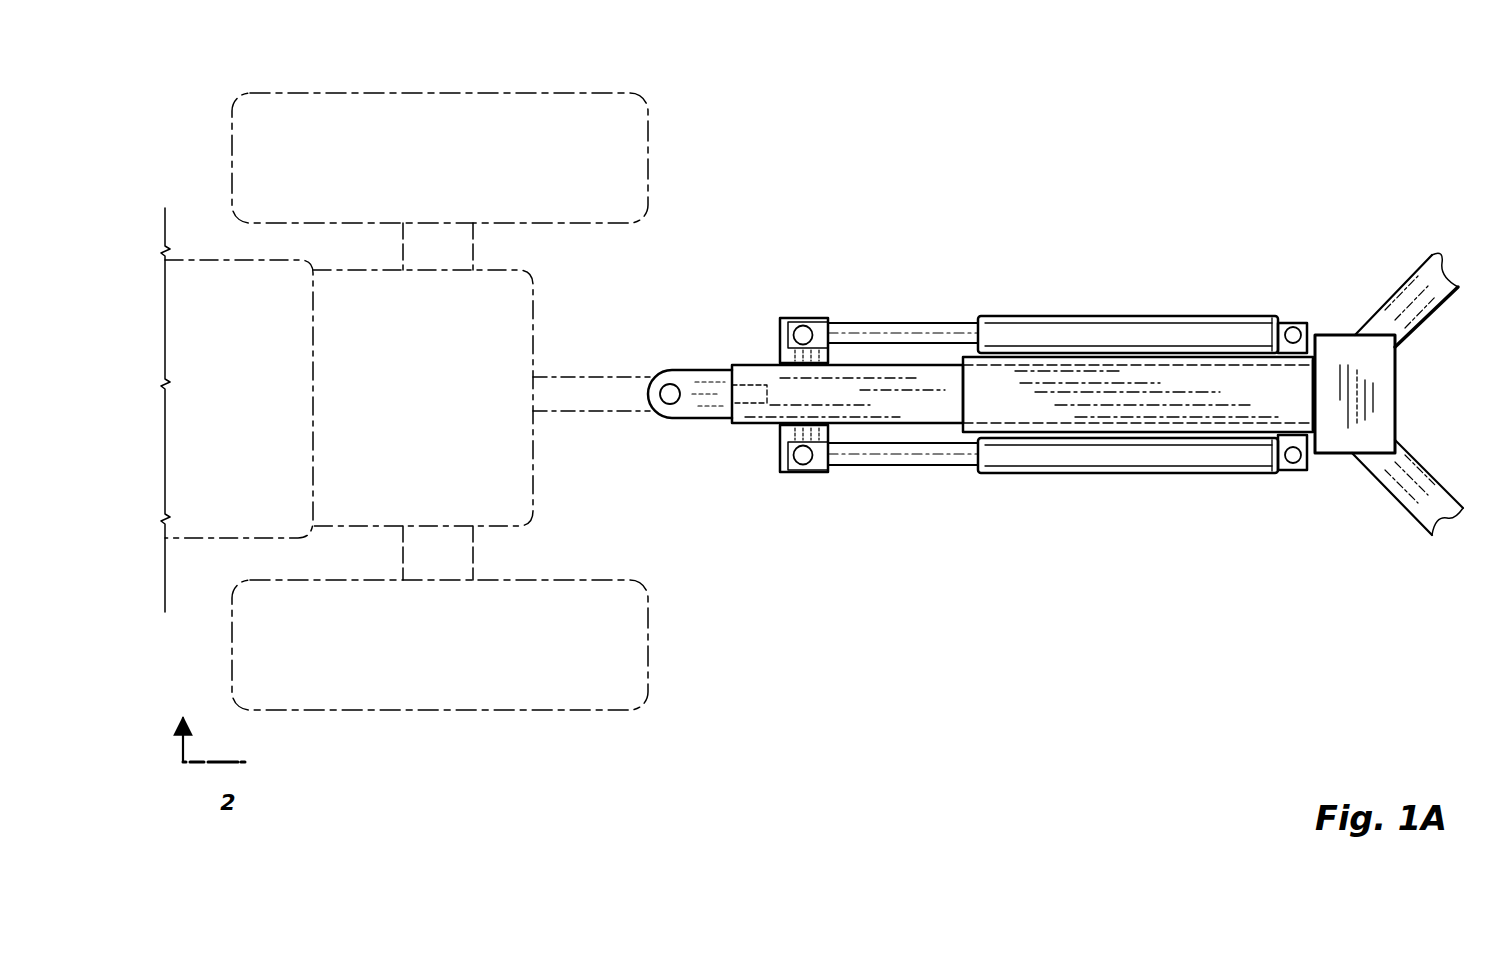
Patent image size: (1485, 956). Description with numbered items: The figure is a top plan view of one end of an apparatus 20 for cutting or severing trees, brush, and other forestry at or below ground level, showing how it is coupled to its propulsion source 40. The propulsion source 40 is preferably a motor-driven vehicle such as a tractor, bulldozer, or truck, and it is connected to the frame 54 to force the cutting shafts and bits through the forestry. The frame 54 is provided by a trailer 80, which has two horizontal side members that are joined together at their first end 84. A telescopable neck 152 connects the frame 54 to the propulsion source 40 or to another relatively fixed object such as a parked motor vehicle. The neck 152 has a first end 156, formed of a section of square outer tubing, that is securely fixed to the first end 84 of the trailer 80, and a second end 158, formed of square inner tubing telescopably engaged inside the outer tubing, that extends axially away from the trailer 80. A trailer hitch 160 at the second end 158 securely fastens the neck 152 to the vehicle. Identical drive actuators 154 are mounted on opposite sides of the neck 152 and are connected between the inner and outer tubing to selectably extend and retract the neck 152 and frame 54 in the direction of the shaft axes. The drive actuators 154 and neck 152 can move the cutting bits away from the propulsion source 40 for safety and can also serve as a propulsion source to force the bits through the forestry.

The propulsion source 40 is at (717, 228).
The apparatus 20 is at (1153, 282).
The telescopable neck 152 is at (1030, 297).
The drive actuator 154 is at (997, 333).
The first end of the neck 156 is at (1290, 415).
The second end of the neck 158 is at (753, 372).
The trailer hitch 160 is at (690, 412).
The first end of the side members 84 is at (1313, 390).
The frame 54 is at (1384, 362).
The trailer 80 is at (1413, 287).